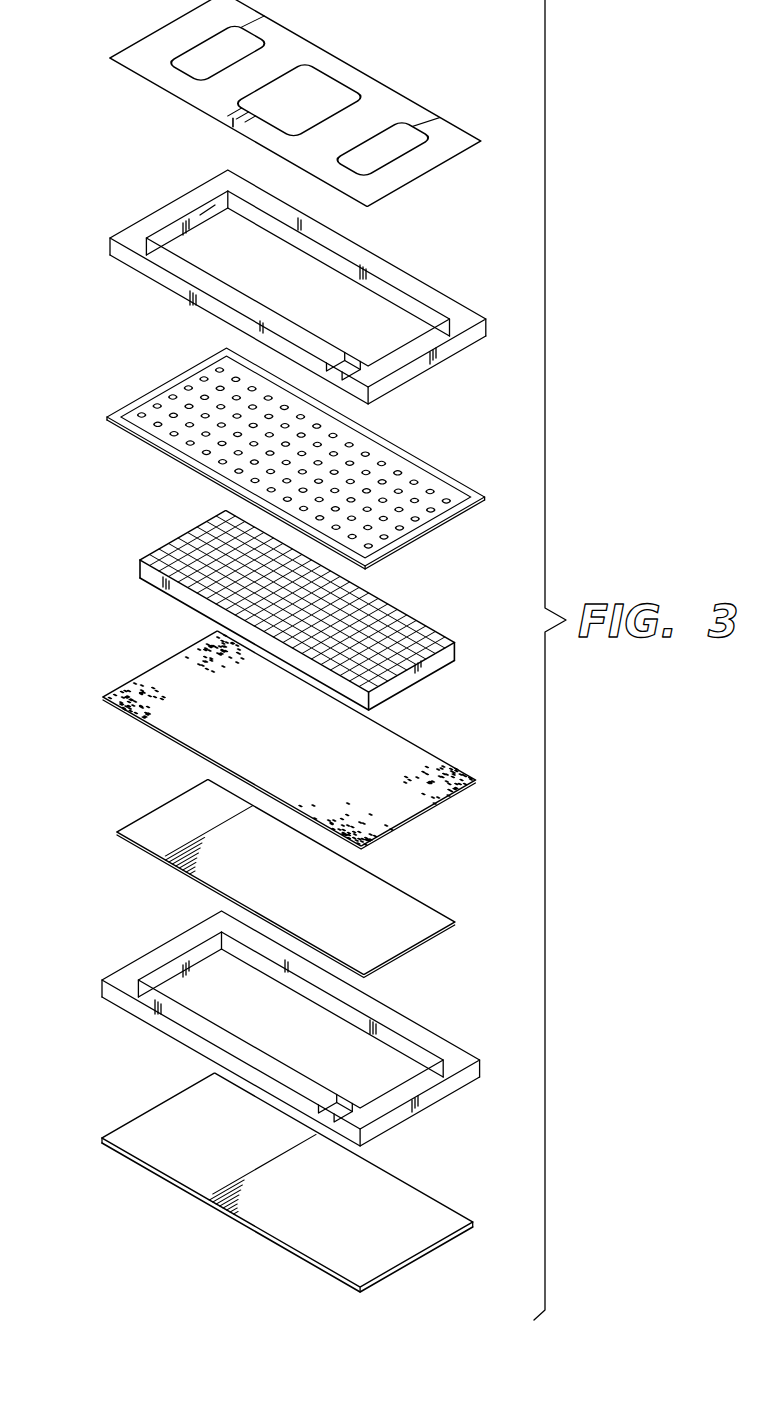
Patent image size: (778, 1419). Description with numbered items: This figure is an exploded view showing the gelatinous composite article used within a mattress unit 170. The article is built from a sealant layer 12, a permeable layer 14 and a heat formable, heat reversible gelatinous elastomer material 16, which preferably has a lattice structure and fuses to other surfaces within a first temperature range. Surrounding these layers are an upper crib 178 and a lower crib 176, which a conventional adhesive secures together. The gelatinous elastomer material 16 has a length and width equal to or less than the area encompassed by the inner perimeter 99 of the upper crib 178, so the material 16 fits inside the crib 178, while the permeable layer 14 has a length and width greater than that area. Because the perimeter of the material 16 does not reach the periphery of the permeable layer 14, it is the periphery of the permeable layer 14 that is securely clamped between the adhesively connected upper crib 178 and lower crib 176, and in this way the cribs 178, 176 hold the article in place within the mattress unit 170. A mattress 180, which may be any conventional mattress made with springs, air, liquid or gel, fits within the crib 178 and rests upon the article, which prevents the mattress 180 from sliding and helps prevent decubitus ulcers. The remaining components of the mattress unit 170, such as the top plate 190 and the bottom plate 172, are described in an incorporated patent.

The mattress unit component 190 is at (378, 82).
The mattress unit 170 is at (100, 229).
The upper crib 178 is at (385, 270).
The inner perimeter 99 is at (205, 222).
The mattress 180 is at (140, 407).
The gelatinous elastomer material 16 is at (147, 572).
The permeable layer 14 is at (147, 683).
The sealant layer 12 is at (173, 813).
The lower crib 176 is at (160, 950).
The mattress unit component 172 is at (380, 1251).